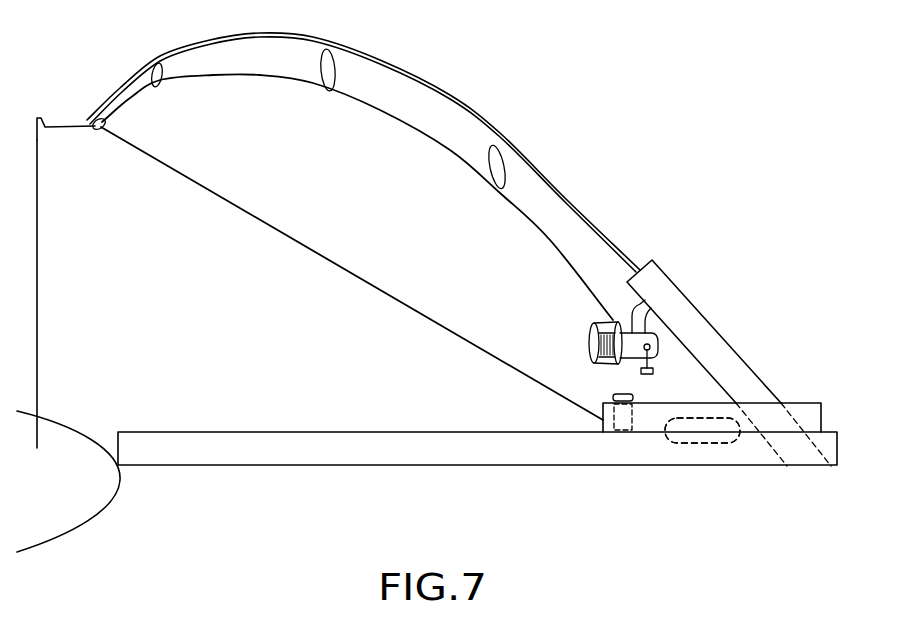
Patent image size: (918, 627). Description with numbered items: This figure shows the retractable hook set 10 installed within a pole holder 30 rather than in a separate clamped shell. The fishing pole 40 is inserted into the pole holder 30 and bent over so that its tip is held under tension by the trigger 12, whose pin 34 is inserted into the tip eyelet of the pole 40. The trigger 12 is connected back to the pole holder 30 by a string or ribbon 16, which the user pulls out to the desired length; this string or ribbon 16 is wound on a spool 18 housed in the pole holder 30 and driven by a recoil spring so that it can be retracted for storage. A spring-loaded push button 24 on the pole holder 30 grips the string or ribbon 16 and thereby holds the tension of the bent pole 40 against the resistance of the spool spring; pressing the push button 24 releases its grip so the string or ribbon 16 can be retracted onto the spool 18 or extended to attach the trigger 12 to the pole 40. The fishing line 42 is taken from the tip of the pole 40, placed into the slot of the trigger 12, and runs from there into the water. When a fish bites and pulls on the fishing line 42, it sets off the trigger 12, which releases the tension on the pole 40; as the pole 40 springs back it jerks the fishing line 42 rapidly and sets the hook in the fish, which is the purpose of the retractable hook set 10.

The retractable hook set 10 is at (699, 440).
The trigger 12 is at (56, 110).
The string or ribbon 16 is at (279, 250).
The spool 18 is at (731, 456).
The push button 24 is at (600, 379).
The pole holder 30 is at (799, 381).
The pin 34 is at (780, 422).
The fishing pole 40 is at (470, 110).
The fishing line 42 is at (58, 273).